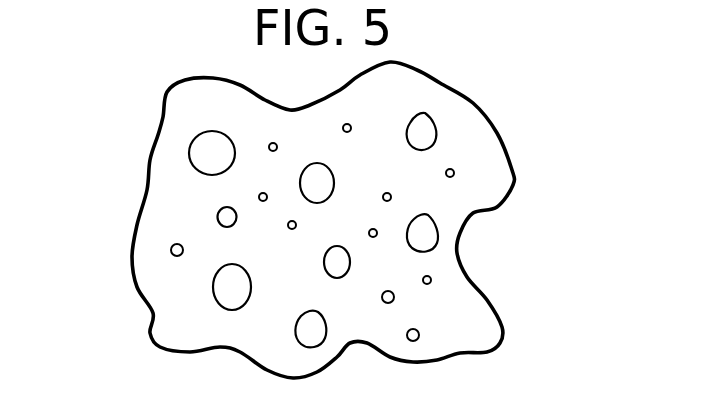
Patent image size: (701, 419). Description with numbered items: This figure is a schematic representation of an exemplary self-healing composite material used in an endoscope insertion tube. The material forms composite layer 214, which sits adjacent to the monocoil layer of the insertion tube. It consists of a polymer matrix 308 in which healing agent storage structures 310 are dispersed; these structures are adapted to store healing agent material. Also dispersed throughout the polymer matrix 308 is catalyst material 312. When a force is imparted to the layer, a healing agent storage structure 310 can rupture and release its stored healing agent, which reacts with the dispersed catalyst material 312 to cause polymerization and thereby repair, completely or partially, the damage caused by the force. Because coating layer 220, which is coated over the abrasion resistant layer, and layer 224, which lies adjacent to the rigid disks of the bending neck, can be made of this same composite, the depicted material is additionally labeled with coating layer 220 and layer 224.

The composite layer 214 is at (550, 80).
The coating layer 220 is at (340, 220).
The layer 224 is at (340, 220).
The polymer matrix 308 is at (457, 297).
The healing agent storage structures 310 is at (218, 217).
The catalyst material 312 is at (274, 143).